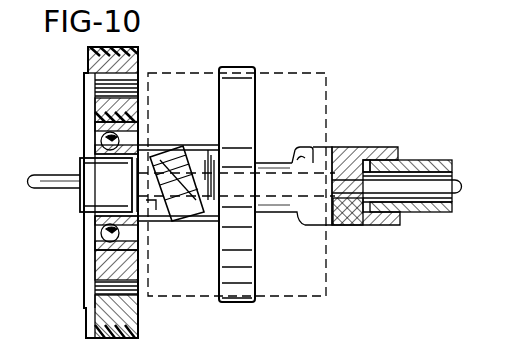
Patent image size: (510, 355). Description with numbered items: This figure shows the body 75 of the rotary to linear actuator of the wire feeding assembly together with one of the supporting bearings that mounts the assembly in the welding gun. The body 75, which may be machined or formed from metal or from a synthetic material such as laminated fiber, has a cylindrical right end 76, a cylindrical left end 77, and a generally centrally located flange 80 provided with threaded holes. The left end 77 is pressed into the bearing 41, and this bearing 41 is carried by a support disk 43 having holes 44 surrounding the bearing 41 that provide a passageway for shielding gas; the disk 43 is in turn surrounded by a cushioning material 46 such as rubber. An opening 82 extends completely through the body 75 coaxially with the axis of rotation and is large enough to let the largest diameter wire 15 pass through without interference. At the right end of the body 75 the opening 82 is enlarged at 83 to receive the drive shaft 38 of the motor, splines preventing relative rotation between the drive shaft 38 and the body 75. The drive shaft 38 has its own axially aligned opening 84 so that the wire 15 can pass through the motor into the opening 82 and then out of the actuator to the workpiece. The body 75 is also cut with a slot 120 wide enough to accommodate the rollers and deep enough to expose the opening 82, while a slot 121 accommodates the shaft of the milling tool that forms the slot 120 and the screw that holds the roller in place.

The wire 15 is at (49, 190).
The drive shaft 38 is at (428, 170).
The bearing 41 is at (84, 132).
The support disk 43 is at (86, 62).
The holes 44 is at (90, 105).
The cushioning material 46 is at (86, 49).
The body 75 is at (273, 192).
The cylindrical right end 76 is at (352, 150).
The cylindrical left end 77 is at (82, 207).
The flange 80 is at (233, 287).
The opening 82 is at (352, 205).
The enlarged portion of the opening 83 is at (378, 162).
The axially aligned opening 84 is at (405, 204).
The slot 120 is at (178, 150).
The slot 121 is at (300, 150).